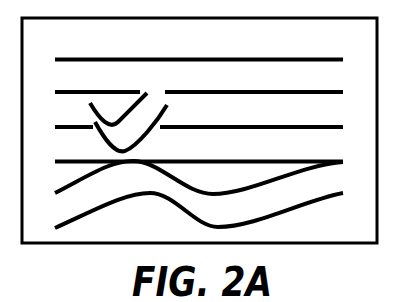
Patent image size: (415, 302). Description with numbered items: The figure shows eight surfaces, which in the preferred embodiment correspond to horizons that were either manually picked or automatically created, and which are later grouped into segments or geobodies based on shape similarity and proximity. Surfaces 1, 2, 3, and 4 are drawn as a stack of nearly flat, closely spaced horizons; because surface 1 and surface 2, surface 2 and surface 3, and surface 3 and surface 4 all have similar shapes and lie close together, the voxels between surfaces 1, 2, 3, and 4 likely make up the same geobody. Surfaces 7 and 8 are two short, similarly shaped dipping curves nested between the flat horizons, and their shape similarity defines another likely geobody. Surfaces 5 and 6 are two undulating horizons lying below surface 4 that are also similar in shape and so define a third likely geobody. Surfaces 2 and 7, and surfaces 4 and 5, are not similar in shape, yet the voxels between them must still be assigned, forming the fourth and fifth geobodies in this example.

The surface 1 is at (199, 60).
The surface 2 is at (199, 93).
The surface 3 is at (199, 128).
The surface 4 is at (199, 163).
The surface 5 is at (191, 184).
The surface 6 is at (199, 210).
The surface 7 is at (126, 102).
The surface 8 is at (140, 124).